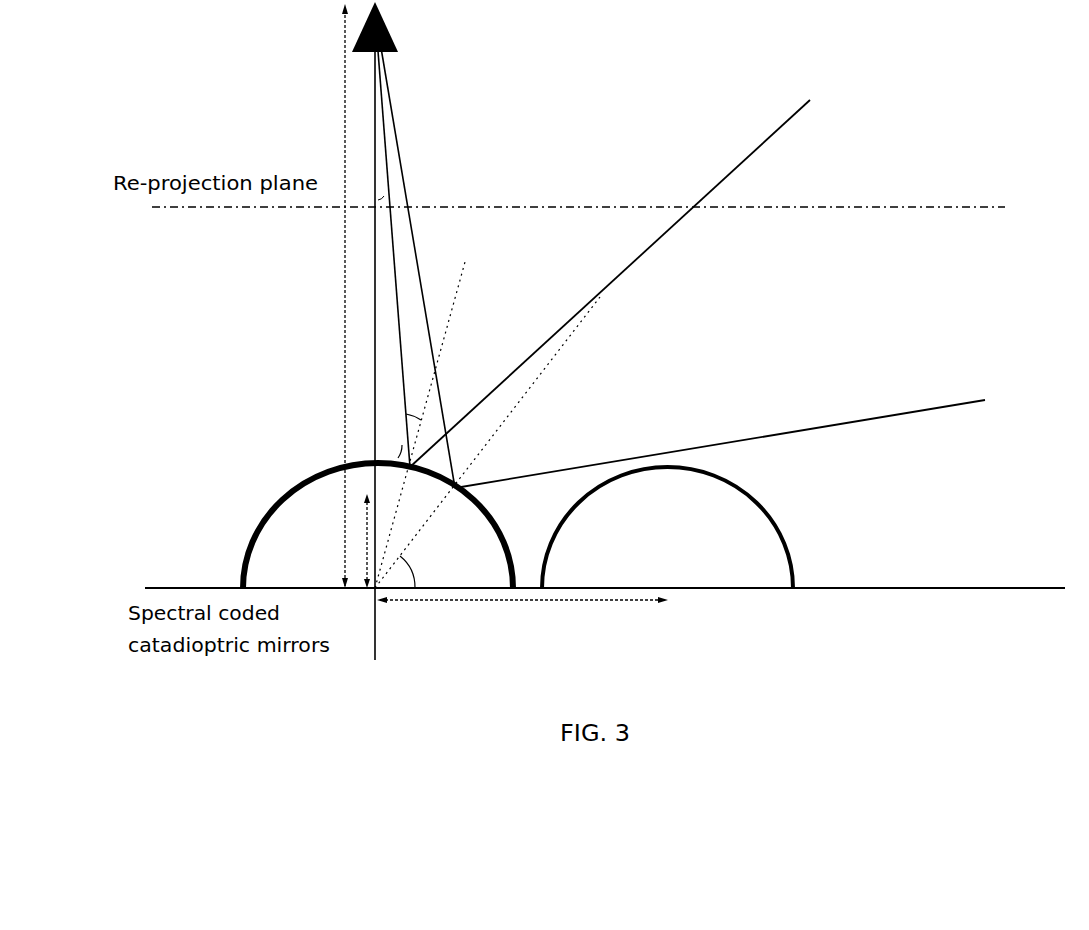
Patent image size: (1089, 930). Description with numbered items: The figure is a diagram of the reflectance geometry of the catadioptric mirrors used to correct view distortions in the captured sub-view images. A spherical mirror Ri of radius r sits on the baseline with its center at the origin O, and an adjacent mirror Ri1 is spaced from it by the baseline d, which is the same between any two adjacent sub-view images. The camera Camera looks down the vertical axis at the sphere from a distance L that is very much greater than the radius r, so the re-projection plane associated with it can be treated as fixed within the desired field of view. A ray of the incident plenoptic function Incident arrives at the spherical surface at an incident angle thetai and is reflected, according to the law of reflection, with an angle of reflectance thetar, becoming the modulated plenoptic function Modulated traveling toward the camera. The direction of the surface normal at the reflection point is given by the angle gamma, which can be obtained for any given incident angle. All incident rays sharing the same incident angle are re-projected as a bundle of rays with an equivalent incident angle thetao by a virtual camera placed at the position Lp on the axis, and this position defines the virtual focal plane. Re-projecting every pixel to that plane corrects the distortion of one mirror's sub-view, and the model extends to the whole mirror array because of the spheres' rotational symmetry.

The camera Camera is at (421, 27).
The camera distance l L is at (336, 296).
The virtual camera position l' Lp is at (357, 541).
The baseline d is at (522, 608).
The spectral coded catadioptric mirror Ri is at (344, 525).
The adjacent spectral coded catadioptric mirror Ri1 is at (717, 527).
The modulated plenoptic function rays Modulated is at (515, 250).
The incident plenoptic function rays Incident is at (730, 289).
The mirror radius r is at (487, 442).
The surface normal direction gamma is at (419, 572).
The angle of reflectance thetar is at (415, 402).
The equivalent incident angle thetao is at (390, 460).
The incident angle thetai is at (381, 190).
The origin O is at (390, 603).